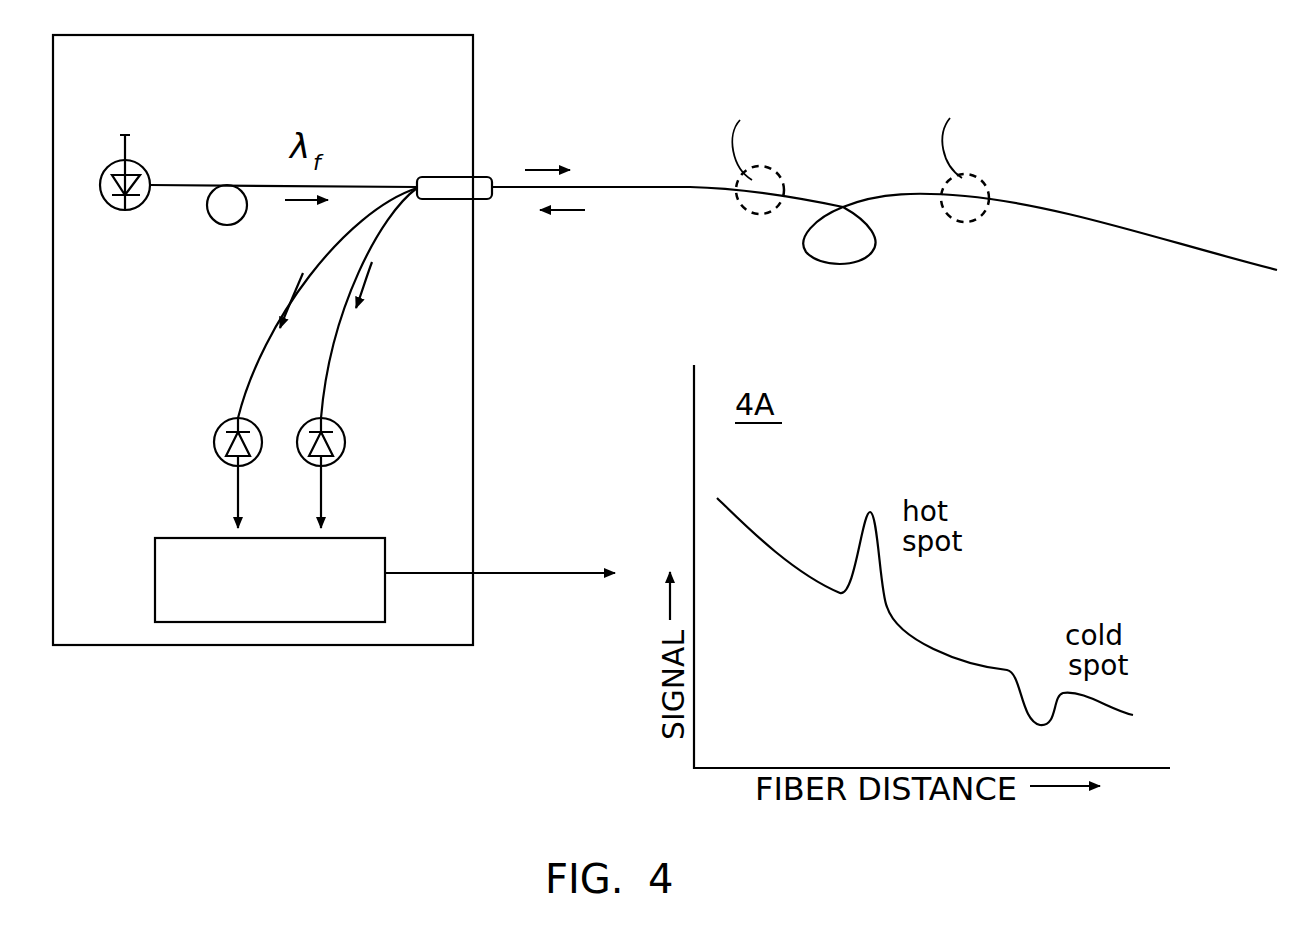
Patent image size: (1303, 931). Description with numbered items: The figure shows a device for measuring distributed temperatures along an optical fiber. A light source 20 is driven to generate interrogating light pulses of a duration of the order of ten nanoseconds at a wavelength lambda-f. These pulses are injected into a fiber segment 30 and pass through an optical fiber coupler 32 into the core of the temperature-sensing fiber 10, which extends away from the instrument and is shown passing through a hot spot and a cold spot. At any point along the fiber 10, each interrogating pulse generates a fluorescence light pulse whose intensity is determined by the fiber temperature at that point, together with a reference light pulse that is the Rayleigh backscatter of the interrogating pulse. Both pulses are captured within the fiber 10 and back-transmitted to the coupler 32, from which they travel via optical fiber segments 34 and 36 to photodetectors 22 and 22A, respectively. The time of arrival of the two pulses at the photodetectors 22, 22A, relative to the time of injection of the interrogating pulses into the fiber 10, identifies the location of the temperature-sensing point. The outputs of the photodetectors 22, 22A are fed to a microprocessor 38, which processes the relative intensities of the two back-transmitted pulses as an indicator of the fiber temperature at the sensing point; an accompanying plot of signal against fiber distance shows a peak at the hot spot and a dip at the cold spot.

The temperature-sensing fiber 10 is at (628, 185).
The light source 20 is at (118, 207).
The photodetector 22 is at (215, 440).
The photodetector 22A is at (345, 440).
The fiber segment 30 is at (198, 182).
The optical fiber coupler 32 is at (440, 177).
The optical fiber segment 34 is at (273, 303).
The optical fiber segment 36 is at (337, 333).
The microprocessor 38 is at (270, 580).